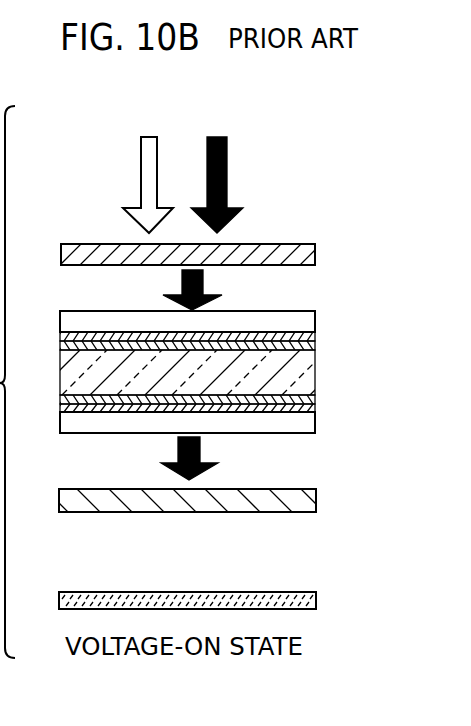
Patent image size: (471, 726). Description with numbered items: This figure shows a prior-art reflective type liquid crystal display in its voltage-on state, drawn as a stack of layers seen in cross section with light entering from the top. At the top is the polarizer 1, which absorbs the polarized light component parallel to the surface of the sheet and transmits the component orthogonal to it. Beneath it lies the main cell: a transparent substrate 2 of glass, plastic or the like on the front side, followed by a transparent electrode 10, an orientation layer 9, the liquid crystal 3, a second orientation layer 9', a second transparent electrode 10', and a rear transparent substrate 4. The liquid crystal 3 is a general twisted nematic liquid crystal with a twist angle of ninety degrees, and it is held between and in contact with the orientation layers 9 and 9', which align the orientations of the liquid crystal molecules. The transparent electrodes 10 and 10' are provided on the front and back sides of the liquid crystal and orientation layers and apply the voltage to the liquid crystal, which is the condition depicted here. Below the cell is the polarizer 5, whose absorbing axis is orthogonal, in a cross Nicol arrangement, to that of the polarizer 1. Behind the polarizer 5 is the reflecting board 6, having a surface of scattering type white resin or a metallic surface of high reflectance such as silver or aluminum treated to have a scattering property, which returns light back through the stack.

The polarizer 1 is at (312, 252).
The transparent substrate 2 is at (310, 317).
The transparent electrode 10 is at (222, 333).
The orientation layer 9 is at (203, 349).
The liquid crystal 3 is at (312, 376).
The orientation layer 9' is at (206, 398).
The transparent electrode 10' is at (225, 416).
The transparent substrate 4 is at (312, 427).
The polarizer 5 is at (316, 500).
The reflecting board 6 is at (316, 600).